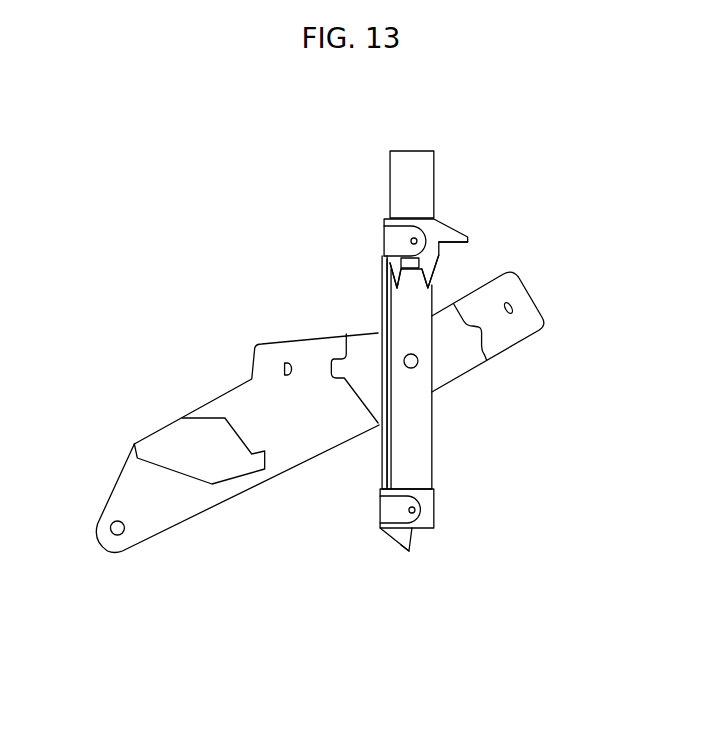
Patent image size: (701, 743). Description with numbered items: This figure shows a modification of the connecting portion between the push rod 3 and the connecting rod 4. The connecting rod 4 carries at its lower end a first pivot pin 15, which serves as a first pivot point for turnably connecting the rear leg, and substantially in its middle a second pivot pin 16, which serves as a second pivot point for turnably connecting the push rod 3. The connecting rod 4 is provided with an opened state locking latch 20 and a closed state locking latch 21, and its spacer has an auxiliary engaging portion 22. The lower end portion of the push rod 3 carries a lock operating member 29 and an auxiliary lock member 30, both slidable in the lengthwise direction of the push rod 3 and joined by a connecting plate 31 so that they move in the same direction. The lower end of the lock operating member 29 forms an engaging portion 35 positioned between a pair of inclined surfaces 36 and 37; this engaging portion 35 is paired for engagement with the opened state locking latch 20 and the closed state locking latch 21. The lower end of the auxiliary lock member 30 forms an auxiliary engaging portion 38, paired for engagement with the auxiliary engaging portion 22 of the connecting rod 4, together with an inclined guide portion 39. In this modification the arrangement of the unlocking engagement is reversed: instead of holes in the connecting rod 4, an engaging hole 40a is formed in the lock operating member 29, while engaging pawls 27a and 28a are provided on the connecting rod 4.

The push rod 3 is at (435, 458).
The connecting rod 4 is at (203, 393).
The first pivot pin 15 is at (112, 522).
The second pivot pin 16 is at (417, 364).
The opened state locking latch 20 is at (478, 330).
The closed state locking latch 21 is at (290, 342).
The auxiliary engaging portion 22 is at (257, 462).
The engaging pawl 27a is at (512, 307).
The engaging pawl 28a is at (283, 364).
The lock operating member 29 is at (400, 222).
The auxiliary lock member 30 is at (425, 510).
The connecting plate 31 is at (377, 452).
The engaging portion 35 is at (442, 256).
The inclined surface 36 is at (433, 281).
The inclined surface 37 is at (388, 282).
The auxiliary engaging portion 38 is at (407, 548).
The inclined guide portion 39 is at (377, 538).
The engaging hole 40a is at (400, 262).